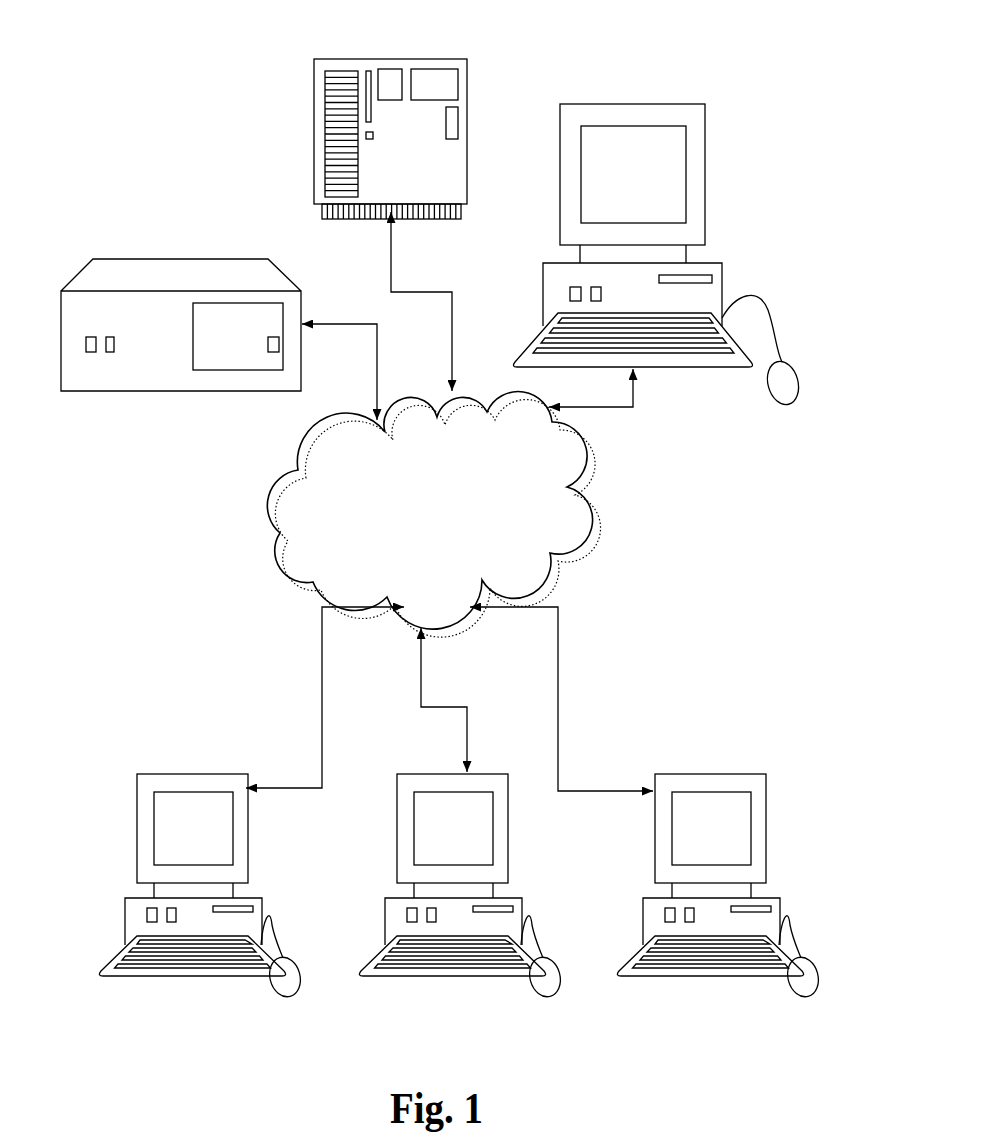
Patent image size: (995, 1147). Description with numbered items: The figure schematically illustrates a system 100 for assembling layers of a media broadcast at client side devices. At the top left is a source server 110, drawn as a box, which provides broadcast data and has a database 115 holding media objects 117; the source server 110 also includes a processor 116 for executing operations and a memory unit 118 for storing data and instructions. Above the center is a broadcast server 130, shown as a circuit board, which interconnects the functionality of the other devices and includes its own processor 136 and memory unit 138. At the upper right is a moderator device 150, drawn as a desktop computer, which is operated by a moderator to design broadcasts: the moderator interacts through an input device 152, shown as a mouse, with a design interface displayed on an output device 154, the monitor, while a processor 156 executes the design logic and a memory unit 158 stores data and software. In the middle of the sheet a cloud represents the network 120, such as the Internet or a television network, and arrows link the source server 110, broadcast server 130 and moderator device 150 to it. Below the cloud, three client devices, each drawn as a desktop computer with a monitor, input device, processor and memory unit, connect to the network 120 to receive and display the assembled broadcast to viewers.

The system 100 is at (178, 92).
The source server 110 is at (128, 259).
The database 115 is at (242, 337).
The processor 116 is at (90, 352).
The media objects 117 is at (273, 352).
The memory unit 118 is at (108, 335).
The network 120 is at (439, 537).
The broadcast server 130 is at (314, 178).
The processor 136 is at (390, 77).
The memory unit 138 is at (428, 76).
The moderator device 150 is at (703, 183).
The input device 152 is at (795, 362).
The output device 154 is at (663, 171).
The processor 156 is at (568, 292).
The memory unit 158 is at (592, 287).